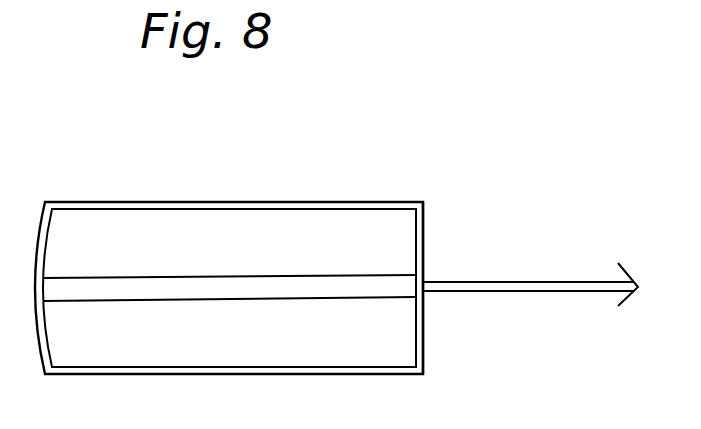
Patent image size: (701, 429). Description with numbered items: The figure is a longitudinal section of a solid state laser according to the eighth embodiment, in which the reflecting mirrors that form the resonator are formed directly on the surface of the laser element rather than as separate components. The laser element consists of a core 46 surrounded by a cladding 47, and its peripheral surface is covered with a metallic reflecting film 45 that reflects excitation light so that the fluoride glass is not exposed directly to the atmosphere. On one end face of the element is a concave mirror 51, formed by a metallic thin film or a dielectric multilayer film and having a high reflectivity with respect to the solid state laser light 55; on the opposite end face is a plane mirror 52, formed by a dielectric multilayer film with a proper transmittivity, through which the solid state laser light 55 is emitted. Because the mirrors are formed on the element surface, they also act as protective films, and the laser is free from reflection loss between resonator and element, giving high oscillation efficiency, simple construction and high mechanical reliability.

The metallic reflecting film 45 is at (245, 202).
The core 46 is at (330, 276).
The cladding 47 is at (398, 223).
The concave mirror 51 is at (43, 248).
The plane mirror 52 is at (423, 250).
The solid state laser light 55 is at (577, 281).